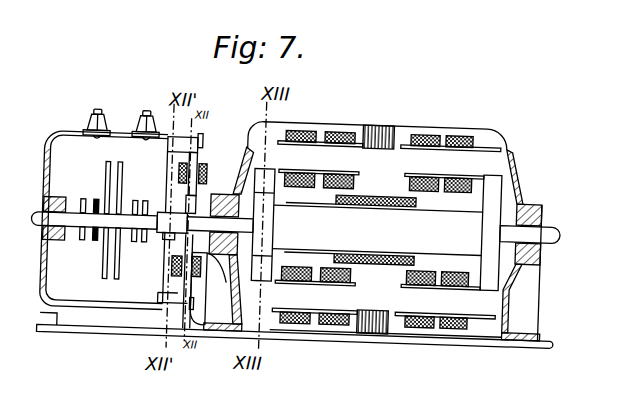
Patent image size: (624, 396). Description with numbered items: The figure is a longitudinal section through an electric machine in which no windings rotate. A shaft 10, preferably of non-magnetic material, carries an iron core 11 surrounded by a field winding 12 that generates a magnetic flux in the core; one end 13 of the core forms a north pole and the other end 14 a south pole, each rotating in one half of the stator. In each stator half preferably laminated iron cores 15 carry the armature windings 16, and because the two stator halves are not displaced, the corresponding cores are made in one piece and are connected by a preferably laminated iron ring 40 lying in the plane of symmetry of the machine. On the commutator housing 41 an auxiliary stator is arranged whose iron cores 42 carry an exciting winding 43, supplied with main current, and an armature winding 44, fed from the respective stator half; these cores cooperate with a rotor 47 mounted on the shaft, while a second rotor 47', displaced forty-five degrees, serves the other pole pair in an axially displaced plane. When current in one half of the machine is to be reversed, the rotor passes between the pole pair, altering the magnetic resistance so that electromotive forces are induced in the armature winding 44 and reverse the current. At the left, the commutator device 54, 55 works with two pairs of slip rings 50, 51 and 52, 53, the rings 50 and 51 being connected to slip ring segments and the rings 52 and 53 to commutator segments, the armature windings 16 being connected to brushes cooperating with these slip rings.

The shaft 10 is at (37, 228).
The iron core 11 is at (440, 230).
The winding 12 is at (383, 187).
The one end of the iron core 13 is at (493, 179).
The other end of the iron core 14 is at (267, 174).
The iron cores 15 is at (455, 127).
The armature windings 16 is at (332, 321).
The iron ring 40 is at (378, 121).
The commutator housing 41 is at (113, 146).
The iron cores 42 is at (192, 162).
The winding 43 is at (203, 175).
The winding 44 is at (173, 272).
The rotor 47 is at (209, 190).
The rotor 47' is at (152, 215).
The slip ring 50 is at (82, 247).
The slip ring 51 is at (98, 252).
The slip ring 52 is at (137, 213).
The slip ring 53 is at (133, 216).
The commutator device 54 is at (106, 283).
The commutator device 55 is at (118, 286).